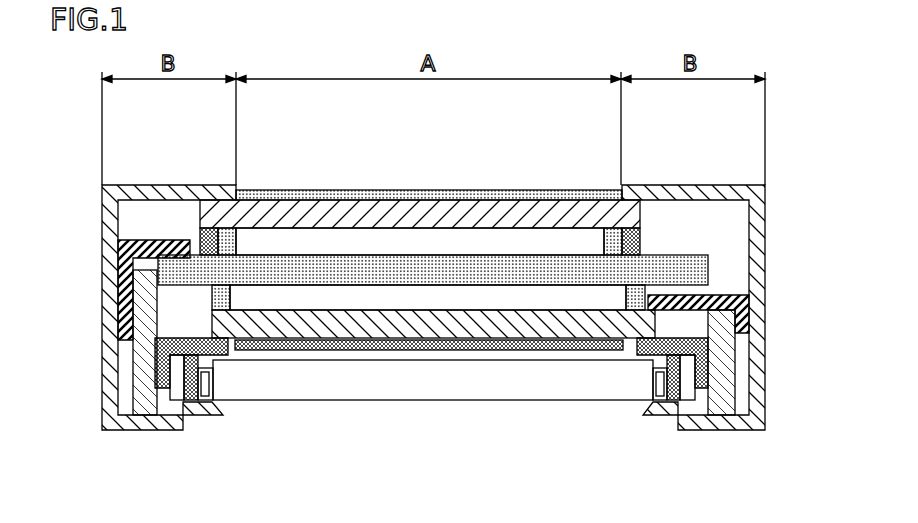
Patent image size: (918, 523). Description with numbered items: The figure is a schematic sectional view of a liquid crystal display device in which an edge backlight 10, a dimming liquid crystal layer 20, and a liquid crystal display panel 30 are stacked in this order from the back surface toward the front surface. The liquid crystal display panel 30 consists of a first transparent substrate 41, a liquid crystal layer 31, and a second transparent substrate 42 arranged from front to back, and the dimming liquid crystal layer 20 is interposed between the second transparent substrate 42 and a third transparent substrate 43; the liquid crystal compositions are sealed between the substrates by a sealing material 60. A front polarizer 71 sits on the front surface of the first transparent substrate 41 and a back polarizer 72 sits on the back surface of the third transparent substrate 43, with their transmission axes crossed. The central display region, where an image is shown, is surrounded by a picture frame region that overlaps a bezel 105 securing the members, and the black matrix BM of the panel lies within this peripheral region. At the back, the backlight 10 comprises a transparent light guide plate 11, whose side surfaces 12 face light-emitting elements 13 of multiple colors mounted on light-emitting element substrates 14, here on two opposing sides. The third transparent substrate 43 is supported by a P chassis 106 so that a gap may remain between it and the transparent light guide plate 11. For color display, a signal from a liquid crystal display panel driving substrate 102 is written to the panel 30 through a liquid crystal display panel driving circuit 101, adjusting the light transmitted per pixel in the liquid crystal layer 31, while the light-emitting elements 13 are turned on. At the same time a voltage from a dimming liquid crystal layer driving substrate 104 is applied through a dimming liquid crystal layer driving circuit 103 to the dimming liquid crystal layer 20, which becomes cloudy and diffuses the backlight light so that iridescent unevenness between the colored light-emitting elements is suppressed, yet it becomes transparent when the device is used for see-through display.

The edge backlight 10 is at (442, 436).
The transparent light guide plate 11 is at (433, 420).
The side surfaces 12 is at (658, 398).
The light-emitting elements 13 is at (190, 395).
The light-emitting element substrates 14 is at (177, 395).
The dimming liquid crystal layer 20 is at (573, 297).
The liquid crystal display panel 30 is at (433, 190).
The liquid crystal layer 31 is at (338, 243).
The first transparent substrate 41 is at (300, 213).
The second transparent substrate 42 is at (382, 273).
The third transparent substrate 43 is at (427, 322).
The sealing material 60 is at (222, 295).
The front polarizer 71 is at (518, 193).
The back polarizer 72 is at (442, 347).
The liquid crystal display panel driving circuit 101 is at (120, 258).
The liquid crystal display panel driving substrate 102 is at (143, 312).
The dimming liquid crystal layer driving circuit 103 is at (745, 303).
The dimming liquid crystal layer driving substrate 104 is at (723, 350).
The bezel 105 is at (185, 405).
The P chassis 106 is at (163, 360).
The black matrix BM is at (207, 228).